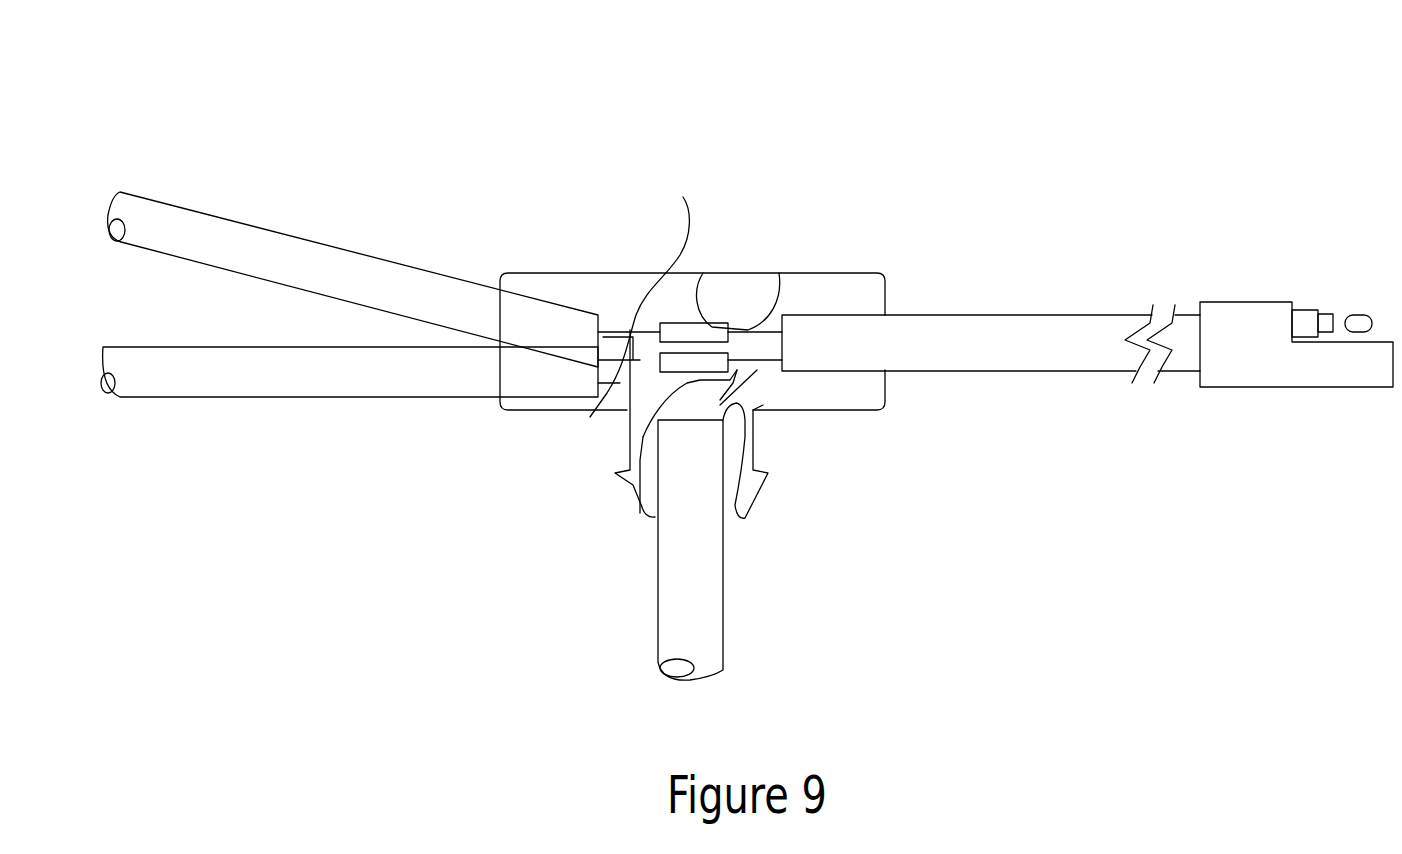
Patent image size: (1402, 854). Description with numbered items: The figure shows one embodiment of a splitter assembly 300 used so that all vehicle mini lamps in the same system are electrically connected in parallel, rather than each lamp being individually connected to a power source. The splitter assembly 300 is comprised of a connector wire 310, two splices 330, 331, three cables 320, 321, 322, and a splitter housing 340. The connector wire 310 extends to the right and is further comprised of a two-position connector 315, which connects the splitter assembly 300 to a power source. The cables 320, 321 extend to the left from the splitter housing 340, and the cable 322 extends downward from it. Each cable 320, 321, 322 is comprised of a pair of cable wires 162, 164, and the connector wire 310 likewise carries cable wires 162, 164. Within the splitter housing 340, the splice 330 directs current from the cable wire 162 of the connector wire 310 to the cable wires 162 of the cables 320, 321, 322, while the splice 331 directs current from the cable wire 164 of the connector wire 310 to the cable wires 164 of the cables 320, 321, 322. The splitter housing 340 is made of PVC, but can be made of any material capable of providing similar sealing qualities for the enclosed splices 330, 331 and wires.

The splitter assembly 300 is at (930, 118).
The connector wire 310 is at (960, 360).
The two-position connector 315 is at (1248, 323).
The cable 320 is at (258, 245).
The cable 321 is at (275, 365).
The cable 322 is at (675, 610).
The splice 330 is at (717, 290).
The splice 331 is at (667, 387).
The splitter housing 340 is at (558, 283).
The cable wire 162 is at (597, 333).
The cable wire 164 is at (610, 542).